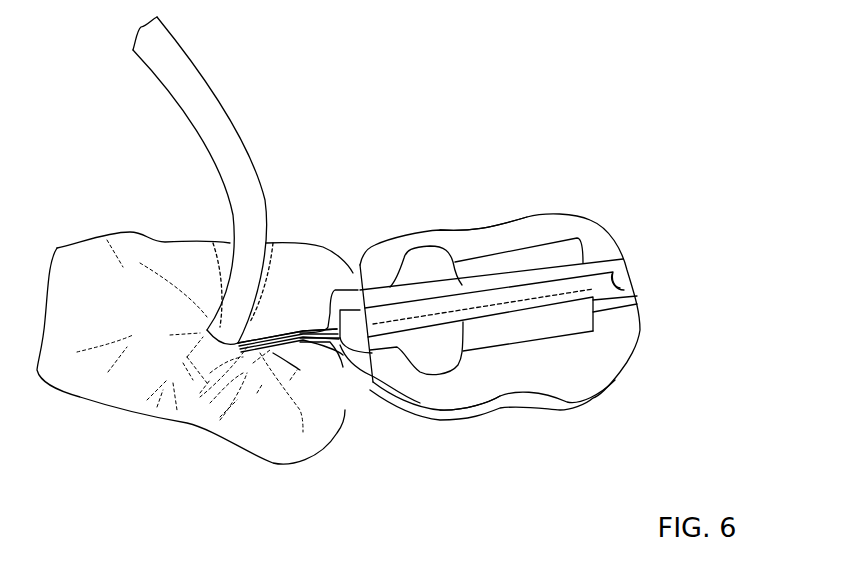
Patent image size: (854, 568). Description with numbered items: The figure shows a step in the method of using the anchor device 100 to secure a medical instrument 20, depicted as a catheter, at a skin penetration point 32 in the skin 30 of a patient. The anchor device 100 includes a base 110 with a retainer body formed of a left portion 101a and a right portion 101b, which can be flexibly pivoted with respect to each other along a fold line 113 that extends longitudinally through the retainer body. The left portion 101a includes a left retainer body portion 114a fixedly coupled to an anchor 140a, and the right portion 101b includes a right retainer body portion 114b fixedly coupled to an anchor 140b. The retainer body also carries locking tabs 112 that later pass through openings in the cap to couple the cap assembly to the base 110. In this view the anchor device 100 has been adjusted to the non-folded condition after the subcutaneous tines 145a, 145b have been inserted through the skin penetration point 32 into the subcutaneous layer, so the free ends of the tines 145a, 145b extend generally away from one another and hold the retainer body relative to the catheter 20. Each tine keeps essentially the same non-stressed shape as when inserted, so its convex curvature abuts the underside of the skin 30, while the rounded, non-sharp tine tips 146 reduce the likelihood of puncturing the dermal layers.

The medical instrument 20 is at (180, 80).
The skin 30 is at (83, 277).
The skin penetration point 32 is at (207, 325).
The anchor device 100 is at (453, 134).
The left portion 101a is at (395, 423).
The right portion 101b is at (400, 226).
The base 110 is at (617, 389).
The locking tabs 112 is at (550, 250).
The fold line 113 is at (614, 273).
The left retainer body portion 114a is at (477, 390).
The right retainer body portion 114b is at (473, 237).
The anchor 140a is at (307, 348).
The anchor 140b is at (300, 326).
The subcutaneous tine 145a is at (273, 393).
The subcutaneous tine 145b is at (284, 300).
The tine tips 146 is at (220, 420).